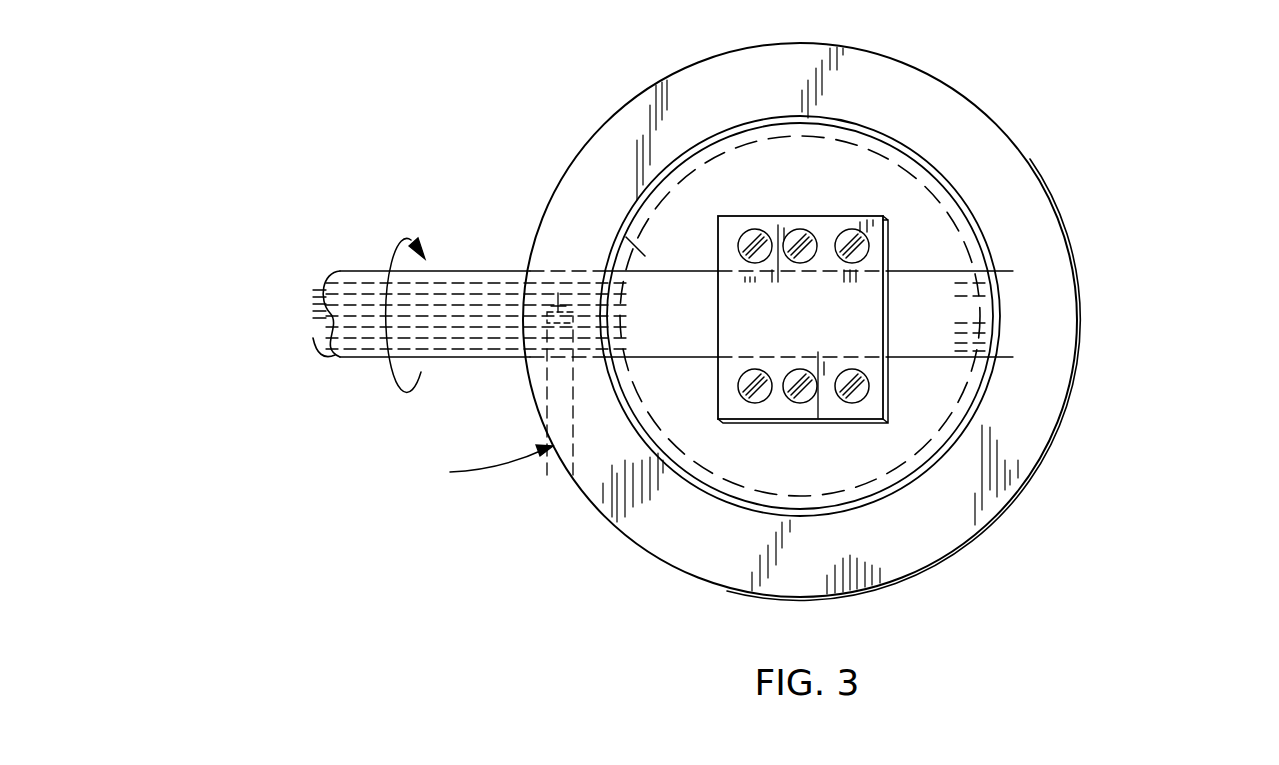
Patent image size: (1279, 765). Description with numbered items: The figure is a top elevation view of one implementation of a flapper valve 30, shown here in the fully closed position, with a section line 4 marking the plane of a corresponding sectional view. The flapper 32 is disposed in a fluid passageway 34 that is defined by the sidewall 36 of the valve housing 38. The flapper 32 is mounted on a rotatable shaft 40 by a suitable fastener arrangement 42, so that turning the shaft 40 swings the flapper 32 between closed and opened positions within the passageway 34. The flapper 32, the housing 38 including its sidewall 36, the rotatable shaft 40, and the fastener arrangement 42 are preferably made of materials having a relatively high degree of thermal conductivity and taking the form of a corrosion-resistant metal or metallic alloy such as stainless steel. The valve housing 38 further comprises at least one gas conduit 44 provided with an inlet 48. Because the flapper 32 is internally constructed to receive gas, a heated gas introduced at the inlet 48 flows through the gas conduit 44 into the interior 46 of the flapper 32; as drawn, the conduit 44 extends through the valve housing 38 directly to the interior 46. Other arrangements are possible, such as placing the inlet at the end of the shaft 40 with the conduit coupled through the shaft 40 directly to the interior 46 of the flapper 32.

The flapper valve 30 is at (1105, 138).
The flapper 32 is at (756, 122).
The fluid passageway 34 is at (980, 228).
The sidewall 36 is at (952, 442).
The valve housing 38 is at (1042, 466).
The rotatable shaft 40 is at (487, 268).
The fastener arrangement 42 is at (718, 383).
The gas conduit 44 is at (547, 392).
The interior of the flapper 46 is at (640, 247).
The inlet 48 is at (433, 474).
The section line 4- 4 is at (305, 313).